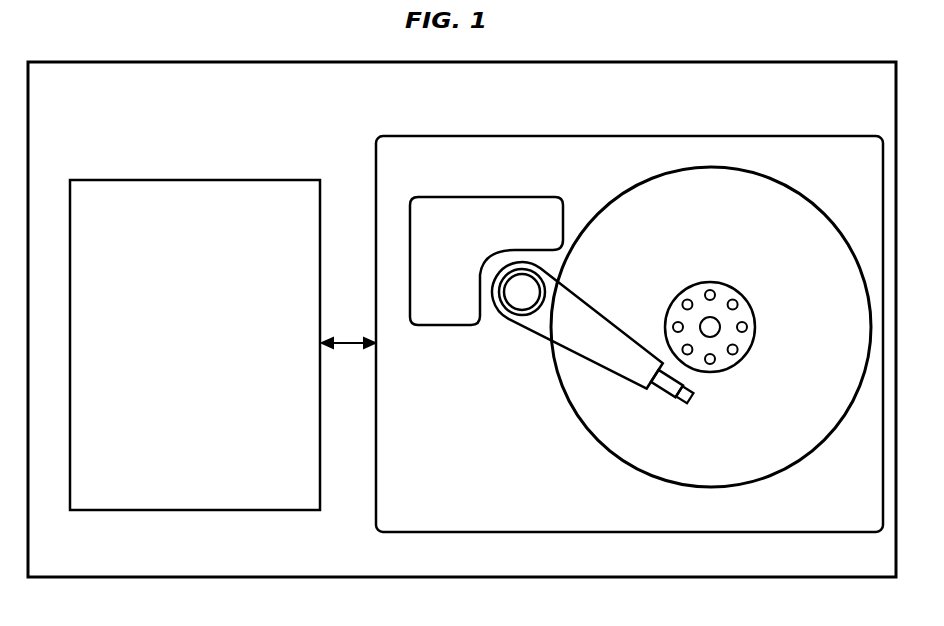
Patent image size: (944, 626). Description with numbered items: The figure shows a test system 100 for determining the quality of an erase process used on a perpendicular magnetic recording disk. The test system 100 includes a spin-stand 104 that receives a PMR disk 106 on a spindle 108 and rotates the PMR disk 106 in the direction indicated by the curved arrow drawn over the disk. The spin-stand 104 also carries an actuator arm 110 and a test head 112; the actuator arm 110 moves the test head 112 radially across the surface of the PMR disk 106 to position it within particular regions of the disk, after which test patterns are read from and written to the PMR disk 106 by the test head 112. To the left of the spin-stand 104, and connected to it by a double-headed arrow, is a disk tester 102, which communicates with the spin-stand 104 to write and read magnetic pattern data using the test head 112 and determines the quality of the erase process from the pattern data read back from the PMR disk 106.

The test system 100 is at (177, 128).
The disk tester 102 is at (212, 270).
The spin-stand 104 is at (545, 167).
The PMR disk 106 is at (598, 247).
The spindle 108 is at (752, 332).
The actuator arm 110 is at (547, 327).
The test head 112 is at (689, 404).